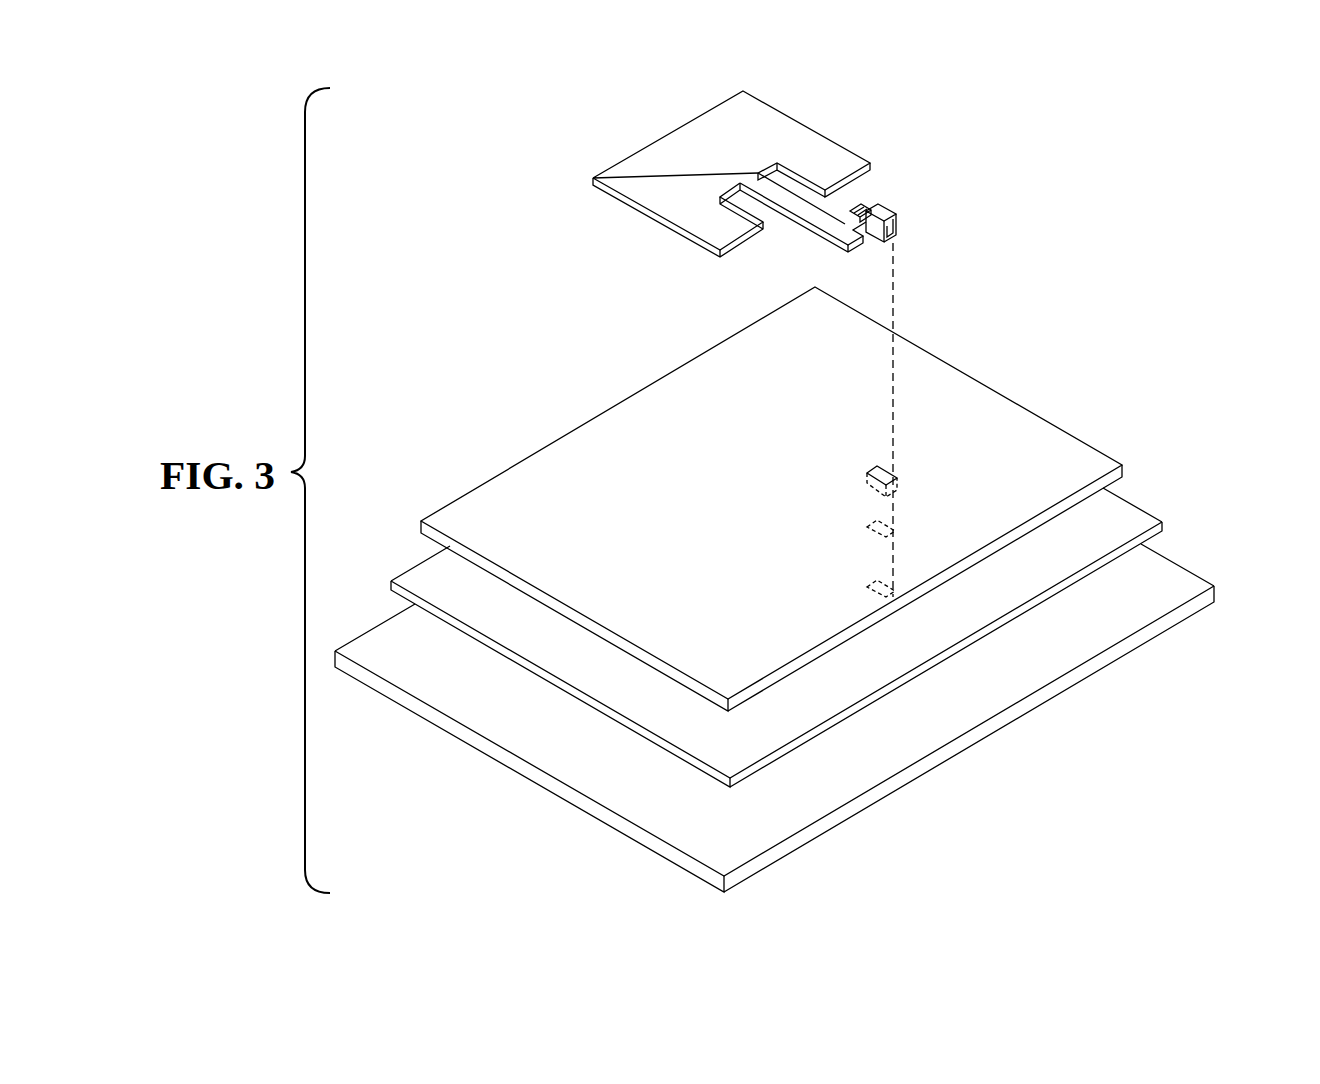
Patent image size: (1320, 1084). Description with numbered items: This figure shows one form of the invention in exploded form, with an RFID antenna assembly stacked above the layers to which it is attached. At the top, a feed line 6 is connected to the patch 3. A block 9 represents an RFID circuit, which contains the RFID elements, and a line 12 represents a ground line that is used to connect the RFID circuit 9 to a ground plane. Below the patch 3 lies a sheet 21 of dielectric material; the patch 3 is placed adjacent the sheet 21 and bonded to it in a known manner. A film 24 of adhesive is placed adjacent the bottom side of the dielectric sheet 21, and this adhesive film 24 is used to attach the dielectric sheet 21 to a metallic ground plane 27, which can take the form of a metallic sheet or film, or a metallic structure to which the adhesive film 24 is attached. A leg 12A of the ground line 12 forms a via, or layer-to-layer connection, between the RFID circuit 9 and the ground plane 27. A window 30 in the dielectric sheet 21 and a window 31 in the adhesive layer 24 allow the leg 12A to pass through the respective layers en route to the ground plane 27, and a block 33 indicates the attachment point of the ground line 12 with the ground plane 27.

The patch 3 is at (722, 157).
The feed line 6 is at (801, 226).
The RFID circuit 9 is at (860, 205).
The ground line 12 is at (882, 205).
The leg of ground line 12A is at (897, 224).
The dielectric sheet 21 is at (973, 378).
The adhesive film 24 is at (1133, 504).
The ground plane 27 is at (1183, 562).
The window in dielectric sheet 30 is at (872, 462).
The window in adhesive layer 31 is at (860, 522).
The attachment point 33 is at (862, 585).